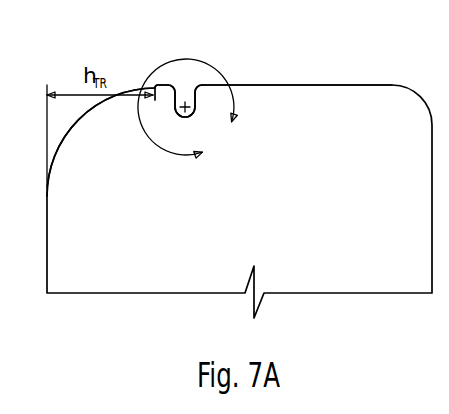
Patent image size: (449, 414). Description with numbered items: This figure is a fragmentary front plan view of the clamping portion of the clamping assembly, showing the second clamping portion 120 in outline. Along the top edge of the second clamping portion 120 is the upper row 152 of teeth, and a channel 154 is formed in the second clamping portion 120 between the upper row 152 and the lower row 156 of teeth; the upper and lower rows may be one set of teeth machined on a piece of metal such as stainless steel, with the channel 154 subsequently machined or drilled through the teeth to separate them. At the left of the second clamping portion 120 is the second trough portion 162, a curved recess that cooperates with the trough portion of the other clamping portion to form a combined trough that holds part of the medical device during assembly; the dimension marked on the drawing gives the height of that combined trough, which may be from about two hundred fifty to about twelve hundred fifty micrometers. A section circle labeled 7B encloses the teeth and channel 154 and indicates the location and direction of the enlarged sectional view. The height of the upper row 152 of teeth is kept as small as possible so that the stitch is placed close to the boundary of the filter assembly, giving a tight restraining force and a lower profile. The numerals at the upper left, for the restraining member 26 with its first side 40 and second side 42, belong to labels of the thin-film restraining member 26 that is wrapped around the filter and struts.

The second clamping portion 120 is at (312, 215).
The upper row of teeth 152 is at (151, 84).
The channel 154 is at (190, 100).
The lower row of teeth 156 is at (305, 95).
The second trough portion 162 is at (117, 173).
The section view indicator 7B is at (195, 119).
The first side 40 is at (0, 6).
The restraining member 26 is at (0, 40).
The second side 42 is at (0, 64).